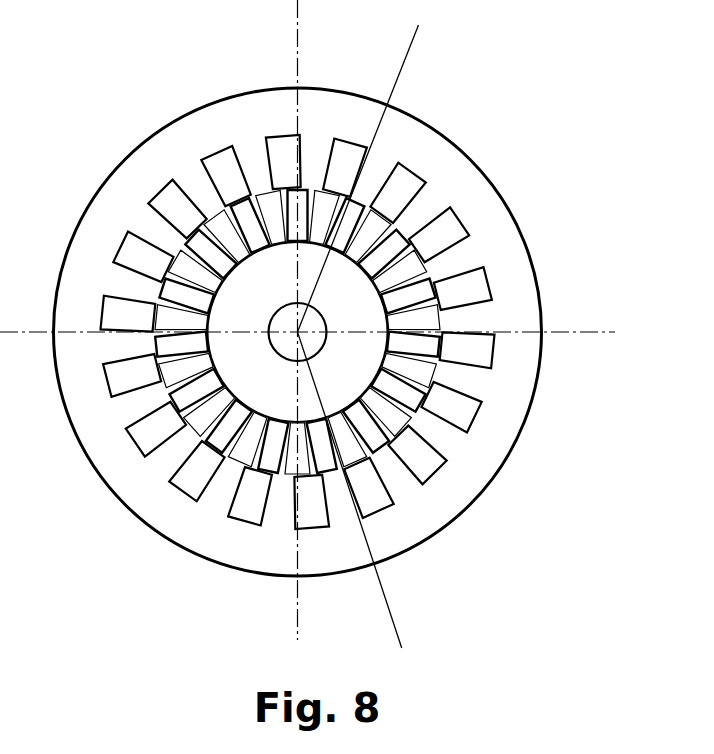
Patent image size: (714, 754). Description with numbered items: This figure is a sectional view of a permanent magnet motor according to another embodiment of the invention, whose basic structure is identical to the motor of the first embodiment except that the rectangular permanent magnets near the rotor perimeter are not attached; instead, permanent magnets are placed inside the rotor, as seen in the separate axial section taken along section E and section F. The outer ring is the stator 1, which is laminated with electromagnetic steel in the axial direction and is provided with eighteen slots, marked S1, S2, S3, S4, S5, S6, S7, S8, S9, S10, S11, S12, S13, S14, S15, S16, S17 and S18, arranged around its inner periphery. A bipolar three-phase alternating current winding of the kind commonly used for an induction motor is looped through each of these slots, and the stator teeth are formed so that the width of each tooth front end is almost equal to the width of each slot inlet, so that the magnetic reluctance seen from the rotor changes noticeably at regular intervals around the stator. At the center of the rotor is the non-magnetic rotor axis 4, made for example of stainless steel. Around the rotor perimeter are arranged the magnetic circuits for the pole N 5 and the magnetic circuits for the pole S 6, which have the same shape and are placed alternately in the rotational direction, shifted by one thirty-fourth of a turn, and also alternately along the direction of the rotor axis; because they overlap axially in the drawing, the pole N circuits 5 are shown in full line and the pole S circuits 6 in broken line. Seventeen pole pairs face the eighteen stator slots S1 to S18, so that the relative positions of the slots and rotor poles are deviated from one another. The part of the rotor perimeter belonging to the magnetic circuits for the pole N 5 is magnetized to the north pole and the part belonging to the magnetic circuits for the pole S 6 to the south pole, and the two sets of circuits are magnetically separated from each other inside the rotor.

The stator 1 is at (318, 105).
The non-magnetic rotor axis 4 is at (313, 342).
The magnetic circuit for the pole N 5 is at (384, 232).
The magnetic circuit for the pole S 6 is at (404, 250).
The section E is at (423, 42).
The section F is at (398, 617).
The slot S1 is at (345, 168).
The slot S2 is at (397, 193).
The slot S3 is at (439, 234).
The slot S4 is at (463, 288).
The slot S5 is at (467, 351).
The slot S6 is at (452, 407).
The slot S7 is at (417, 455).
The slot S8 is at (369, 488).
The slot S9 is at (311, 502).
The slot S10 is at (250, 496).
The slot S11 is at (196, 471).
The slot S12 is at (156, 429).
The slot S13 is at (132, 375).
The slot S14 is at (128, 314).
The slot S15 is at (143, 257).
The slot S16 is at (177, 209).
The slot S17 is at (226, 176).
The slot S18 is at (283, 162).